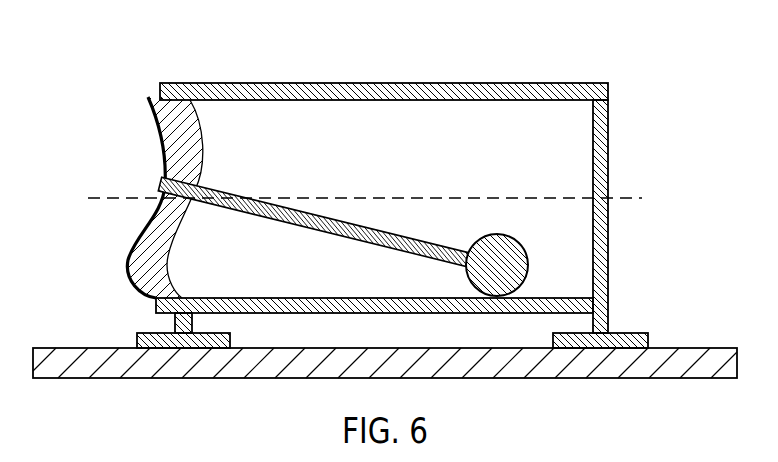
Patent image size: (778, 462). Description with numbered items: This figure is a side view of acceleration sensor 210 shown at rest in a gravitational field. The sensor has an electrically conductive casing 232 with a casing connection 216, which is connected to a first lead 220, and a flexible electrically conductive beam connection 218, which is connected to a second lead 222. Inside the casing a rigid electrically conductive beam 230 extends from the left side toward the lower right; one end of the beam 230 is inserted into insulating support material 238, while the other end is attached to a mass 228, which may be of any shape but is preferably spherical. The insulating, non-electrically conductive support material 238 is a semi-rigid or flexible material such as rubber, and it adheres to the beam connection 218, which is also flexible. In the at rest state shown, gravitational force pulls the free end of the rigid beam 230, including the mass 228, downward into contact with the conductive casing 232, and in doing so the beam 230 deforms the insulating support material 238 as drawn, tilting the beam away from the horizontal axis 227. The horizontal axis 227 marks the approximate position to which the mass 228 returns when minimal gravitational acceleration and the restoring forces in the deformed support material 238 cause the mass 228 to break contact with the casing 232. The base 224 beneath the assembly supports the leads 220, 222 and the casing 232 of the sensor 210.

The sensor 210 is at (141, 52).
The casing connection 216 is at (608, 145).
The beam connection 218 is at (143, 228).
The first lead 220 is at (145, 331).
The second lead 222 is at (627, 333).
The base plate 224 is at (53, 347).
The horizontal axis 227 is at (633, 198).
The mass 228 is at (506, 235).
The beam 230 is at (300, 213).
The casing 232 is at (405, 83).
The insulating support material 238 is at (182, 128).